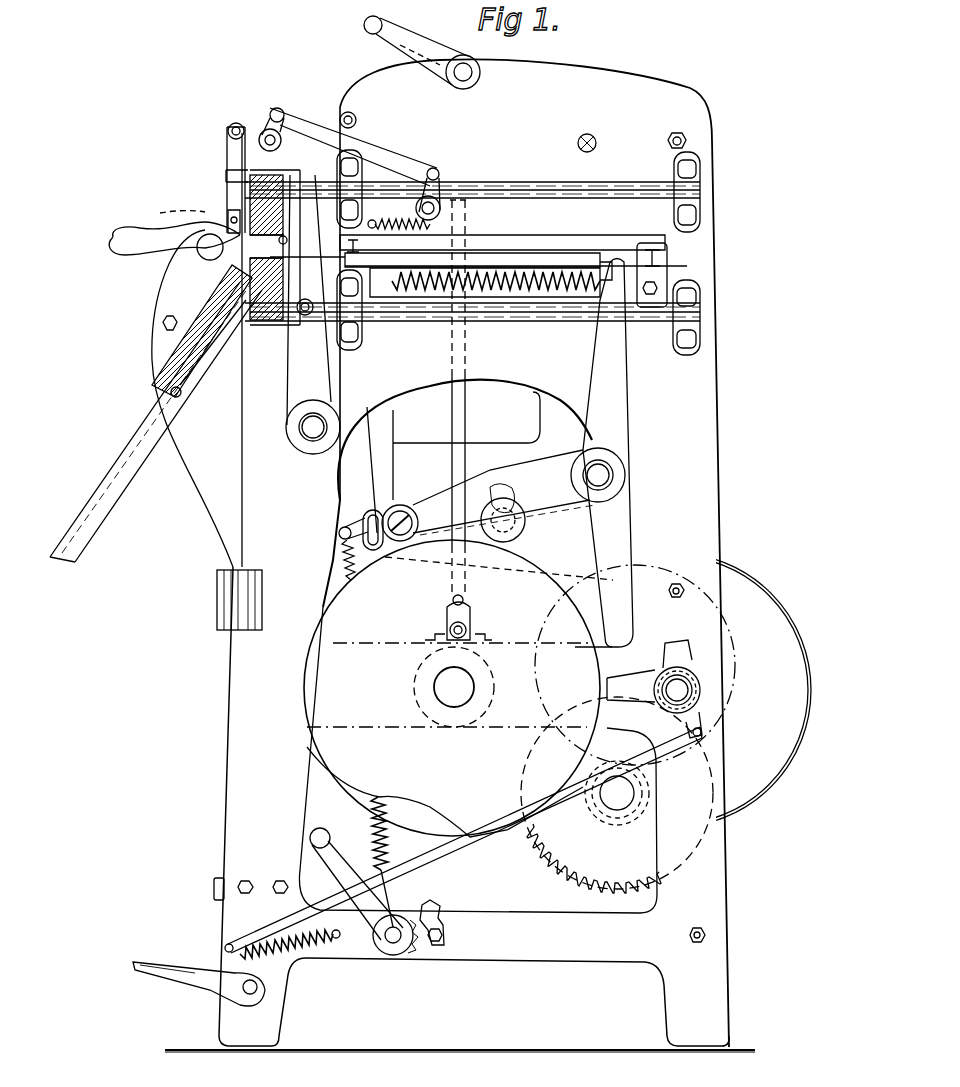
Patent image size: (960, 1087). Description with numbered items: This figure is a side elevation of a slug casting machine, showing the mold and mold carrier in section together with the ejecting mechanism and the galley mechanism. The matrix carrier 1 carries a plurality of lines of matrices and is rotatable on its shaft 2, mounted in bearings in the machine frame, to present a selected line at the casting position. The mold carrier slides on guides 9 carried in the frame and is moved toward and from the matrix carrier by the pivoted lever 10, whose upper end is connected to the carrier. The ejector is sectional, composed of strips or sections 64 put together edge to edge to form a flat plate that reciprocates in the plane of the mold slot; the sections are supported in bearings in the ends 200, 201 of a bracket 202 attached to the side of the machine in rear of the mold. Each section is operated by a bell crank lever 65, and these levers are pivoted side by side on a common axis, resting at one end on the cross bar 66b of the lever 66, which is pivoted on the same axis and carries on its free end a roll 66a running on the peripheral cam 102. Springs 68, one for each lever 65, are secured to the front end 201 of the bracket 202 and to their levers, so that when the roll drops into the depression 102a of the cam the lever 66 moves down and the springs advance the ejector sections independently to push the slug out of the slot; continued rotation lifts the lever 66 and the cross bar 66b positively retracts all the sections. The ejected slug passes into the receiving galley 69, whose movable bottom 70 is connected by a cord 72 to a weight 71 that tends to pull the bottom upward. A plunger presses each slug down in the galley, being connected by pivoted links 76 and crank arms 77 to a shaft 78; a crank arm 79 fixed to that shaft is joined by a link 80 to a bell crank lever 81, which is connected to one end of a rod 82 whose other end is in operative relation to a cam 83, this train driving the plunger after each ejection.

The matrix carrier 1 is at (174, 385).
The shaft 2 is at (197, 252).
The guides 9 is at (562, 333).
The pivoted lever 10 is at (460, 555).
The ejector sections 64 is at (543, 265).
The bell crank levers 65 is at (625, 340).
The lever 66 is at (572, 508).
The roll 66a is at (408, 506).
The cross bar 66b is at (525, 524).
The springs 68 is at (508, 289).
The receiving galley 69 is at (126, 451).
The movable bottom 70 is at (202, 344).
The weight 71 is at (262, 584).
The cord 72 is at (295, 327).
The pivoted links 76 is at (230, 155).
The crank arms 77 is at (258, 117).
The shaft 78 is at (282, 128).
The crank arm 79 is at (268, 130).
The link 80 is at (378, 150).
The bell crank lever 81 is at (444, 182).
The rod 82 is at (458, 411).
The cam 83 is at (432, 718).
The peripheral cam 102 is at (350, 770).
The depression 102a is at (423, 800).
The end of bracket 200 is at (667, 278).
The front end of bracket 201 is at (375, 275).
The bracket 202 is at (497, 246).